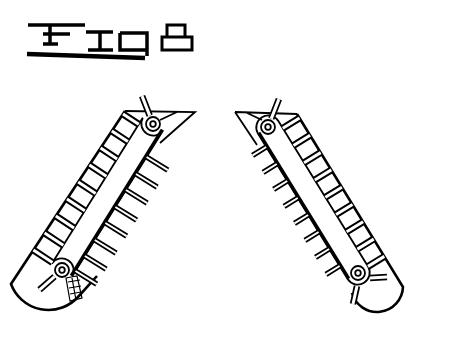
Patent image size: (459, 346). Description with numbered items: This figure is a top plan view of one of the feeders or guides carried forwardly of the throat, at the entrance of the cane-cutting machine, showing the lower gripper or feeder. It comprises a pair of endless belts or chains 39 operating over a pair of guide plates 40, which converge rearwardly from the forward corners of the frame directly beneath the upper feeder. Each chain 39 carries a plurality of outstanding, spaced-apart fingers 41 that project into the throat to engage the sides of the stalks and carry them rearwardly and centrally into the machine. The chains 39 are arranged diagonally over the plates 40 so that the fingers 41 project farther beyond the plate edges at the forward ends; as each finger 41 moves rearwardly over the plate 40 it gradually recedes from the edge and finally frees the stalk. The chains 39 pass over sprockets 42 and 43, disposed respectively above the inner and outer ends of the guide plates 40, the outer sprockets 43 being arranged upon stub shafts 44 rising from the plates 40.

The endless belts or chains 39 is at (163, 163).
The guide plates 40 is at (83, 185).
The fingers 41 is at (110, 253).
The sprockets 42 is at (143, 110).
The outer sprockets 43 is at (335, 276).
The stub shafts 44 is at (74, 280).